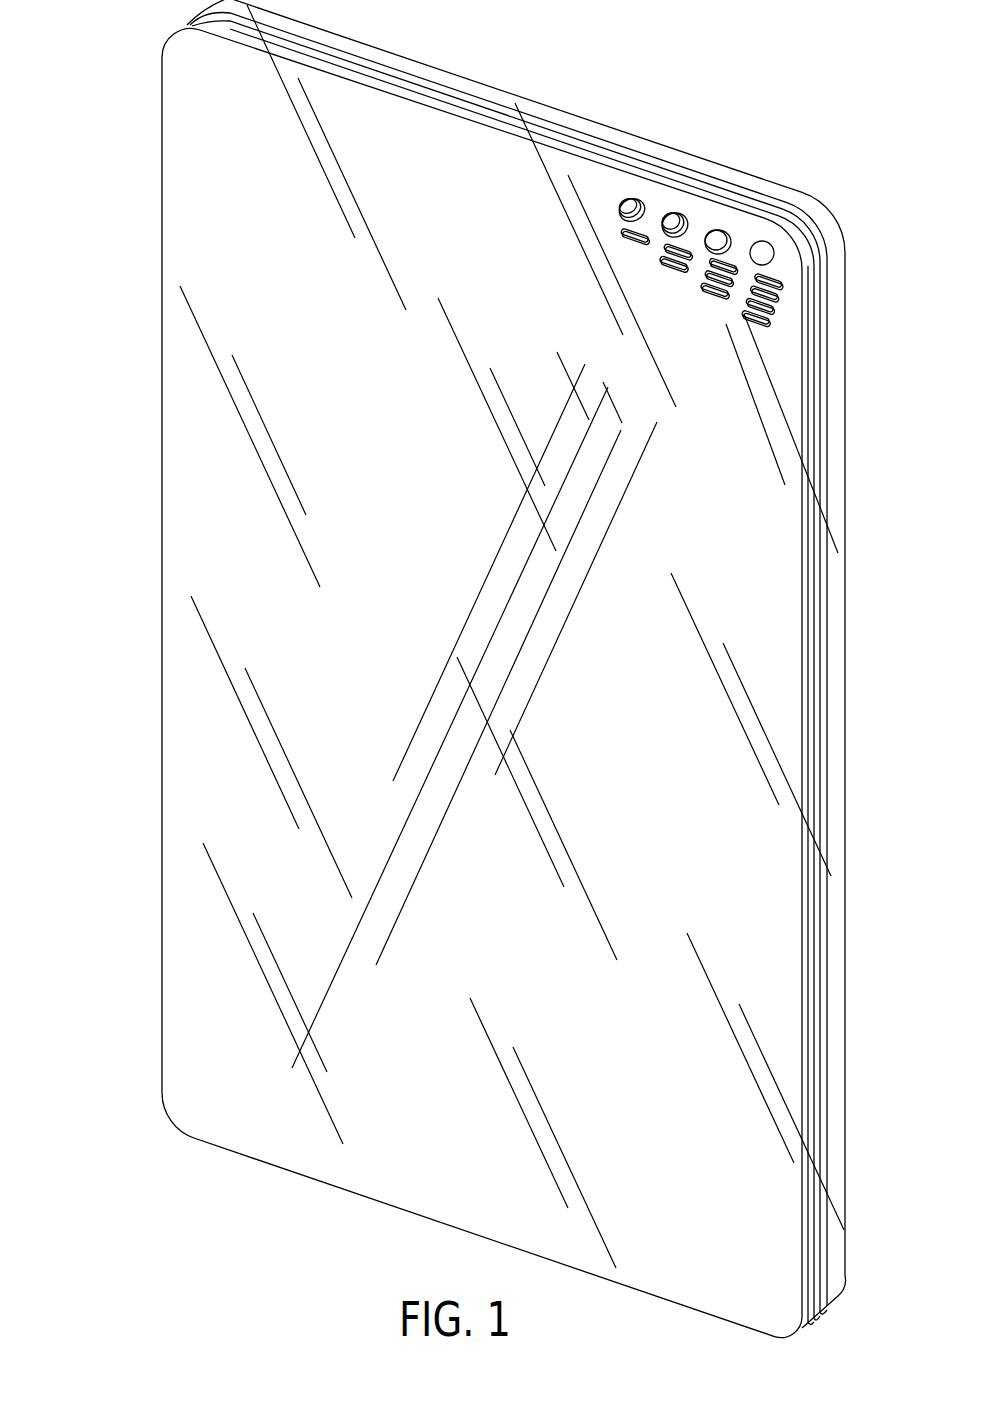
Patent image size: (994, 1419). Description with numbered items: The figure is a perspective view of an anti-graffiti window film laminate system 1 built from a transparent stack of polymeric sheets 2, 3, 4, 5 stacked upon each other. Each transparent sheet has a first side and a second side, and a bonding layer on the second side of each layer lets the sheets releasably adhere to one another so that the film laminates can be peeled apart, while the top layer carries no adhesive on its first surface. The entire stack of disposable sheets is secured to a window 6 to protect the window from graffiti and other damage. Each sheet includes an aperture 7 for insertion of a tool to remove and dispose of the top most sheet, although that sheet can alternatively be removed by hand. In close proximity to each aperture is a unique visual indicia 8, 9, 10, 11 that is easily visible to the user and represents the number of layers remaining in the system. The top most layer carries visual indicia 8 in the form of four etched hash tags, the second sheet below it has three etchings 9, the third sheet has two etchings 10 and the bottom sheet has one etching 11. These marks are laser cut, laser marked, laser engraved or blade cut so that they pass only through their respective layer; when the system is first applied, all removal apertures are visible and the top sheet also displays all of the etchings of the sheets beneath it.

The electronic device 1 is at (97, 104).
The sheet 2 is at (413, 102).
The sheet 3 is at (492, 120).
The sheet 4 is at (573, 143).
The sheet 5 is at (645, 162).
The window 6 is at (808, 208).
The aperture 7 is at (774, 256).
The visual indicia 8 is at (777, 325).
The visual indicia 9 is at (733, 272).
The visual indicia 10 is at (688, 253).
The visual indicia 11 is at (650, 237).